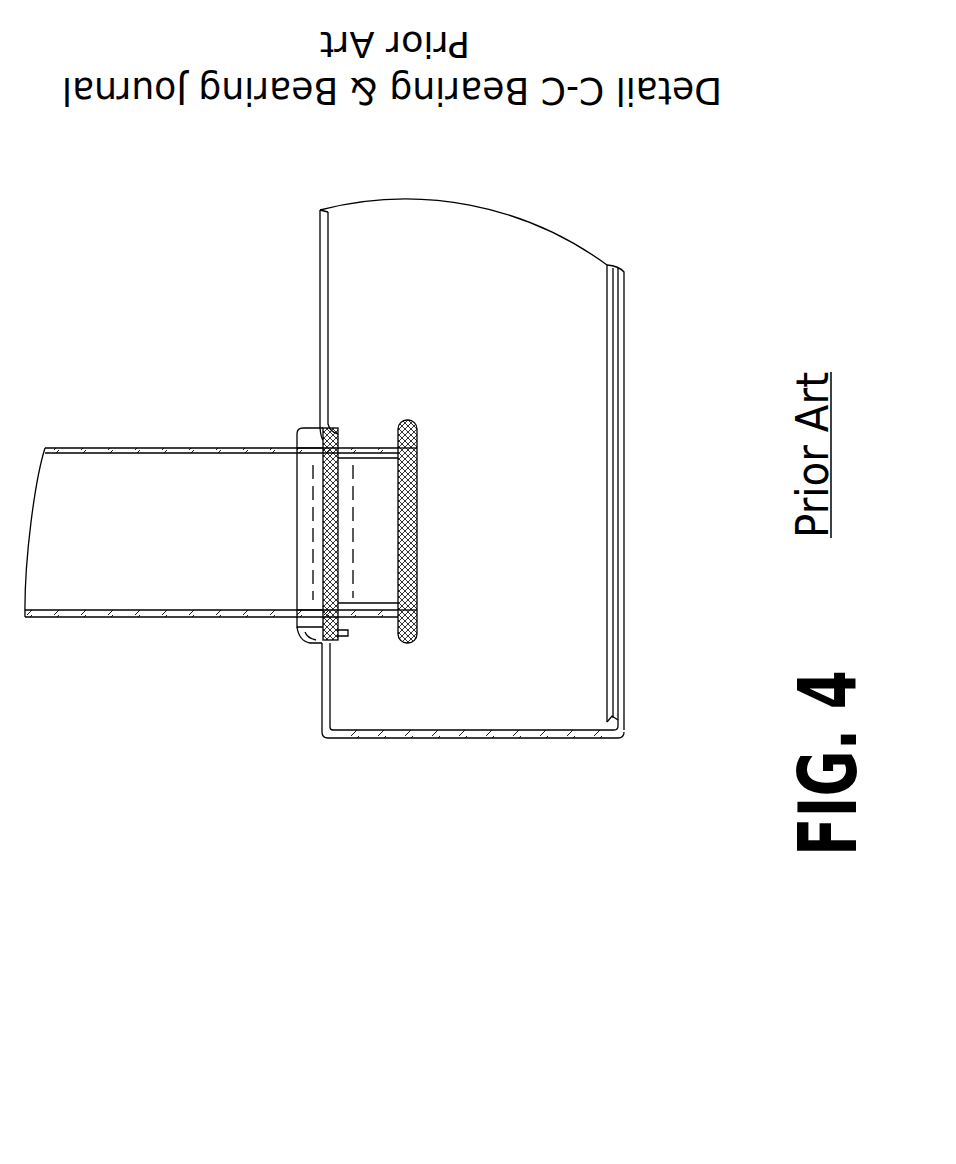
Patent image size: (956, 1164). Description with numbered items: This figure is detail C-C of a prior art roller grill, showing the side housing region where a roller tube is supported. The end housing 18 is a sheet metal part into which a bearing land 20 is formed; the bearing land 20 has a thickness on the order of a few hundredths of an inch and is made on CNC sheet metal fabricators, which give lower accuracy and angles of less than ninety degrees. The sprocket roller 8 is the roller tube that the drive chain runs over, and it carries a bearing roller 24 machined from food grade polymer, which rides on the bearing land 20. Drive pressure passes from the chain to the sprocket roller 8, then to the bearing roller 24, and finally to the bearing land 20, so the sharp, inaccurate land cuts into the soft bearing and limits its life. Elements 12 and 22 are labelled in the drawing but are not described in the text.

The sprocket roller 8 is at (417, 535).
The shaft / bearing journal 12 is at (213, 448).
The end housing 18 is at (627, 712).
The bearing land 20 is at (330, 633).
The flange plate 22 is at (297, 627).
The bearing roller 24 is at (318, 645).